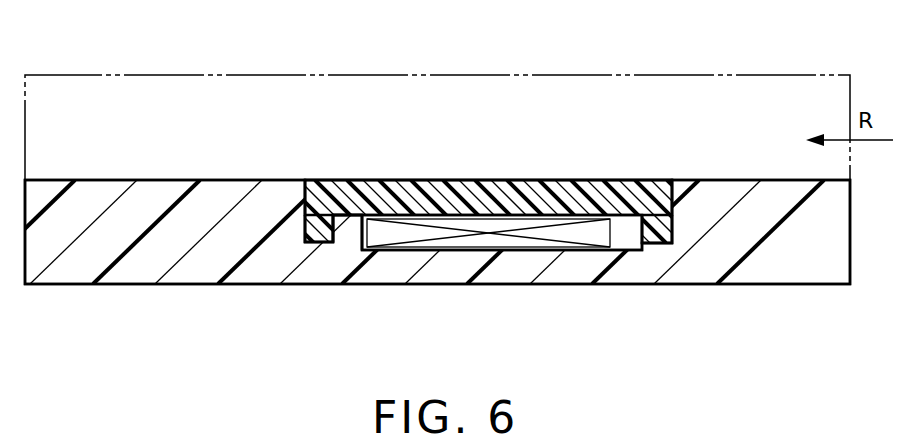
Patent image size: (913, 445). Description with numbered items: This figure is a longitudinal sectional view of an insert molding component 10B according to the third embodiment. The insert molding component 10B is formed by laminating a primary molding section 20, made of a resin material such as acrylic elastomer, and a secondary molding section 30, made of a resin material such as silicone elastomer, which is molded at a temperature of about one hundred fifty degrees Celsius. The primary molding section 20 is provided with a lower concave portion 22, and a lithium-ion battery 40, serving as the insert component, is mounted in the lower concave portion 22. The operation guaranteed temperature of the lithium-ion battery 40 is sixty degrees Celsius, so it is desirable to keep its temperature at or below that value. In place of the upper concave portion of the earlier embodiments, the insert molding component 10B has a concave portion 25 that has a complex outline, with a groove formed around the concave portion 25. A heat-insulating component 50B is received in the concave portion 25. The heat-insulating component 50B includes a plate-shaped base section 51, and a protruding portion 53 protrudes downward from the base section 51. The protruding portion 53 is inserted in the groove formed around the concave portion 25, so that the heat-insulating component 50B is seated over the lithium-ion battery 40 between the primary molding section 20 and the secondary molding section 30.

The insert molding component 10B is at (159, 291).
The primary molding section 20 is at (757, 276).
The lower concave portion 22 is at (368, 232).
The concave portion 25 is at (333, 237).
The secondary molding section 30 is at (733, 73).
The lithium-ion battery 40 is at (515, 240).
The heat-insulating component 50B is at (512, 188).
The base section 51 is at (424, 180).
The protruding portion 53 is at (306, 216).